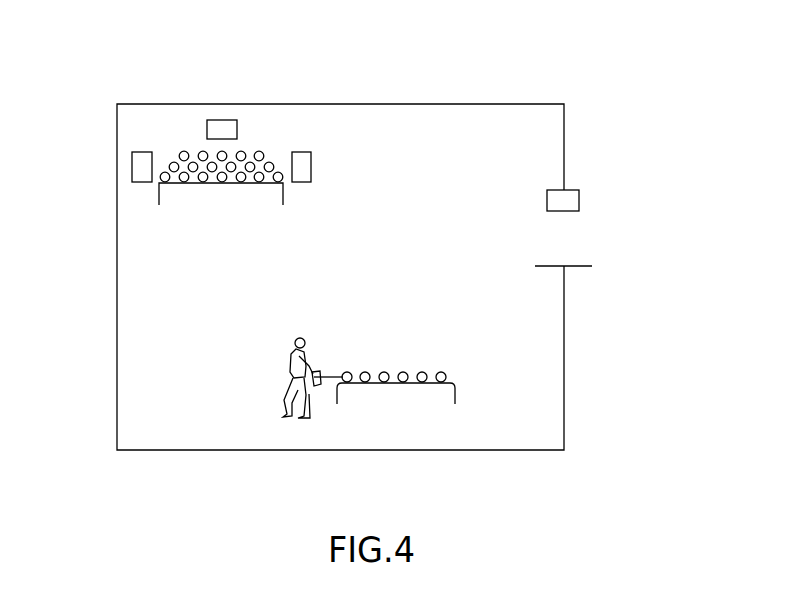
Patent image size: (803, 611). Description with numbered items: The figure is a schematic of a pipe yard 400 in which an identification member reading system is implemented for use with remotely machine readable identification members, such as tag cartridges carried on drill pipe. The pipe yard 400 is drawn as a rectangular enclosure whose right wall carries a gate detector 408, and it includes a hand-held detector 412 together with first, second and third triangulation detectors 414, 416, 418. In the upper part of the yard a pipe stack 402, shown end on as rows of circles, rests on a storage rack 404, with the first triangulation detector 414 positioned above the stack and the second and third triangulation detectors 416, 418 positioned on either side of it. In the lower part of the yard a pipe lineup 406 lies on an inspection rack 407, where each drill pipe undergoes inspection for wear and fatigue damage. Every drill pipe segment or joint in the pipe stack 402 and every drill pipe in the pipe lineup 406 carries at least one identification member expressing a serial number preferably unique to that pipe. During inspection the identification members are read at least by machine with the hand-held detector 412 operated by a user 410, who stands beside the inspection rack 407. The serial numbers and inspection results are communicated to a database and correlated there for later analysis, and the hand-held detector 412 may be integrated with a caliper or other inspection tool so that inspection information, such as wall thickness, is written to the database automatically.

The pipe yard 400 is at (564, 130).
The pipe stack 402 is at (268, 143).
The storage rack 404 is at (283, 199).
The pipe lineup 406 is at (427, 351).
The inspection rack 407 is at (457, 393).
The gate detector 408 is at (579, 198).
The user 410 is at (300, 342).
The hand-held detector 412 is at (333, 376).
The first triangulation detector 414 is at (221, 128).
The second triangulation detector 416 is at (135, 167).
The third triangulation detector 418 is at (303, 169).